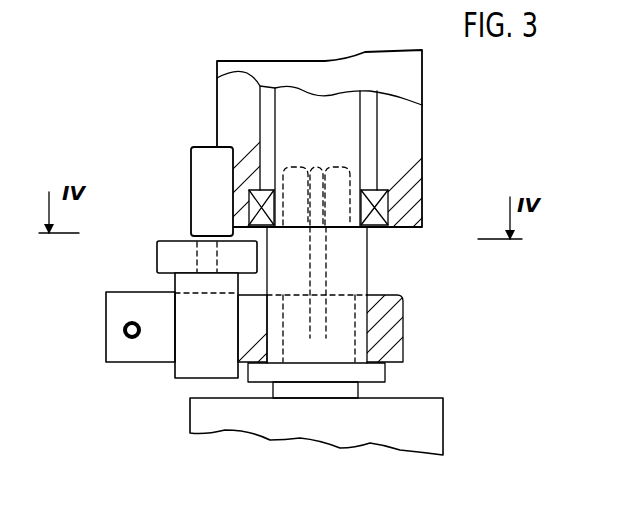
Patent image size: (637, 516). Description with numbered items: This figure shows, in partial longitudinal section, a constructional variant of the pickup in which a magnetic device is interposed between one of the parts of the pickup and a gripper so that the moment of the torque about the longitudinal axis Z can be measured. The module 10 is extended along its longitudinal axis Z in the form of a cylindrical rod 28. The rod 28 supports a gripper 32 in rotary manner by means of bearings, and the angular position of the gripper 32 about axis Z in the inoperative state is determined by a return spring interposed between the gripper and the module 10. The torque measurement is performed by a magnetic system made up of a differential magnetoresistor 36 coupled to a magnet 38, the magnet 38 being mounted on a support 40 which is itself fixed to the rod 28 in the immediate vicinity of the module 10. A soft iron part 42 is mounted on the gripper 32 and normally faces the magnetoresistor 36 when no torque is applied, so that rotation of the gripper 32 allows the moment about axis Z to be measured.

The module 10 is at (443, 423).
The cylindrical rod 28 is at (353, 113).
The gripper 32 is at (408, 160).
The differential magnetoresistor 36 is at (163, 257).
The magnet 38 is at (180, 345).
The support 40 is at (402, 320).
The soft iron part 42 is at (198, 187).